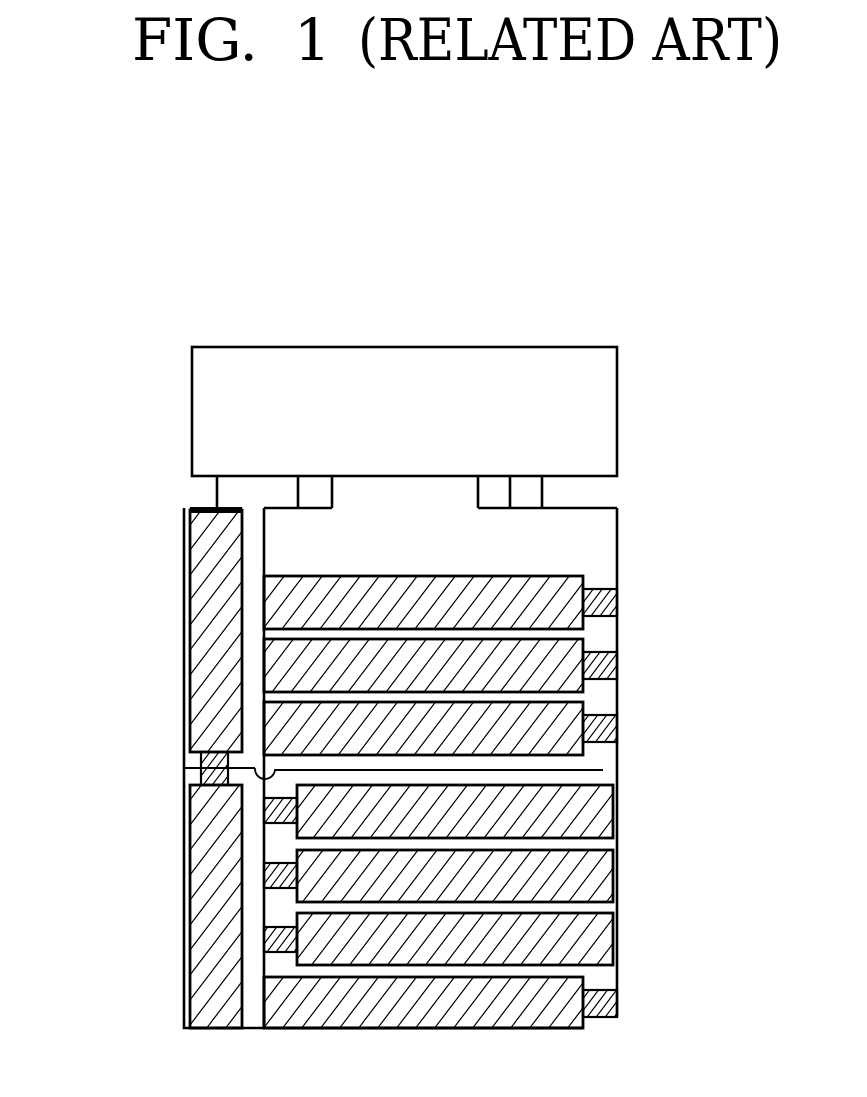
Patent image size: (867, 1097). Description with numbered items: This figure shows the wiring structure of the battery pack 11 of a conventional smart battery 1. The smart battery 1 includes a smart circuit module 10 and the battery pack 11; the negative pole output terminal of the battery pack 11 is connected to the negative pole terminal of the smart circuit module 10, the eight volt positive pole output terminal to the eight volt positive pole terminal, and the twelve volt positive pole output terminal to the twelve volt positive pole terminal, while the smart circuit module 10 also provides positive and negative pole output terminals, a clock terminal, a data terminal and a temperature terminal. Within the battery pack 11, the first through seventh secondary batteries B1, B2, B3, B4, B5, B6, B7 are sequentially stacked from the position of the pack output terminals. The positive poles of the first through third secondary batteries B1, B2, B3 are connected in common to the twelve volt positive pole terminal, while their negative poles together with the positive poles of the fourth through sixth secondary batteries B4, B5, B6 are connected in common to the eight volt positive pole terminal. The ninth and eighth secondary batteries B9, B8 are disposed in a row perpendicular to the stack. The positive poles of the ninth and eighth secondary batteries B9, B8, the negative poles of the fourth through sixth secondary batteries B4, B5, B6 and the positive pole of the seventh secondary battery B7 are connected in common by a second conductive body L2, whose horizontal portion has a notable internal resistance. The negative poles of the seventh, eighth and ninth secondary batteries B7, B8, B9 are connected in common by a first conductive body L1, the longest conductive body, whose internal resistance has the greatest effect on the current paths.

The smart battery 1 is at (642, 318).
The smart circuit module 10 is at (191, 412).
The battery pack 11 is at (118, 747).
The first conductive body L1 is at (184, 768).
The second conductive body L2 is at (603, 770).
The first secondary battery B1 is at (440, 602).
The second secondary battery B2 is at (440, 665).
The third secondary battery B3 is at (440, 728).
The fourth secondary battery B4 is at (438, 811).
The fifth secondary battery B5 is at (438, 876).
The sixth secondary battery B6 is at (438, 939).
The seventh secondary battery B7 is at (440, 1002).
The eighth secondary battery B8 is at (216, 906).
The ninth secondary battery B9 is at (216, 631).